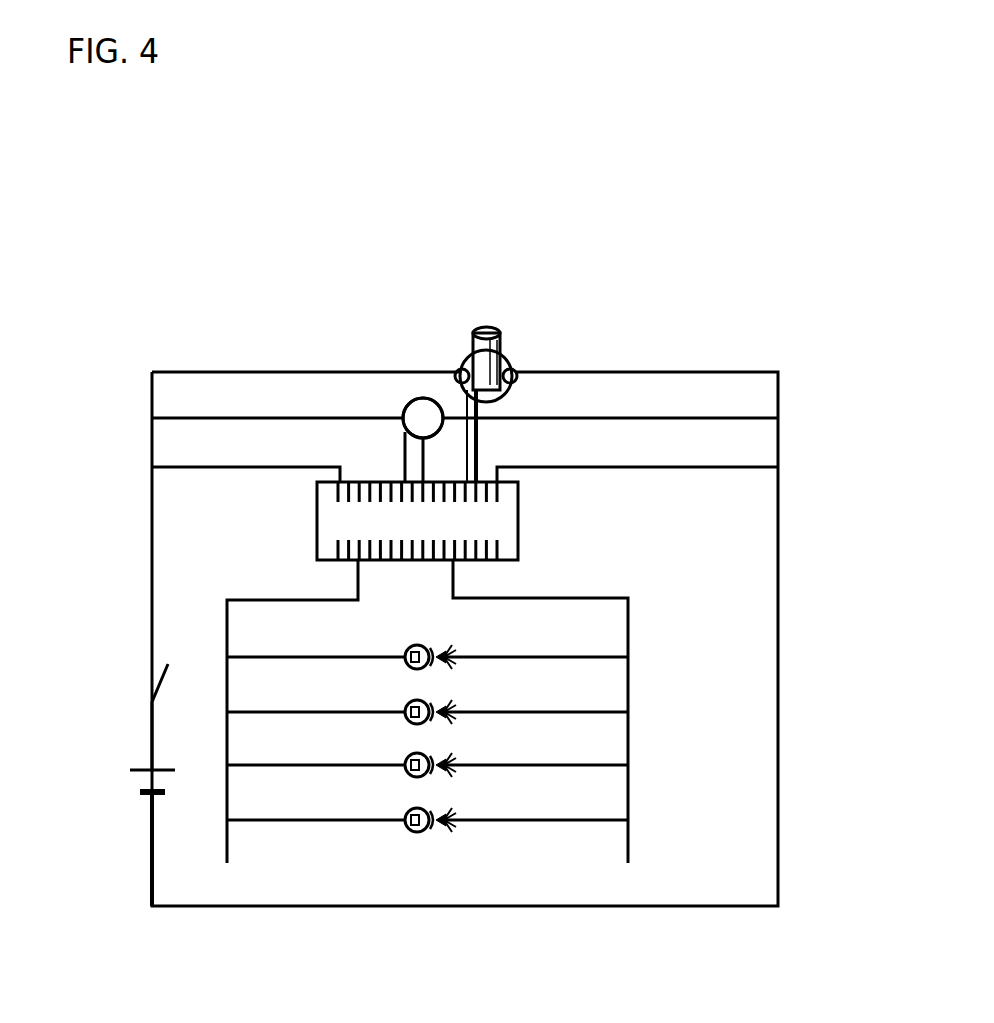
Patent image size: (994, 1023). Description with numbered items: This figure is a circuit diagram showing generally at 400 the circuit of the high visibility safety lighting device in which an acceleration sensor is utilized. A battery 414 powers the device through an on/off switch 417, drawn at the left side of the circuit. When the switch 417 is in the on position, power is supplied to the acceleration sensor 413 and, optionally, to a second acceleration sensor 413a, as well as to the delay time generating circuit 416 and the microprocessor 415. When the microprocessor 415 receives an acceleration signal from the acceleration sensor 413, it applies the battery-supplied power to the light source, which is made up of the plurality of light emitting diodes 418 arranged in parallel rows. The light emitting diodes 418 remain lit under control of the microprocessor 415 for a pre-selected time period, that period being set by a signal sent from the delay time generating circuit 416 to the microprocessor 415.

The circuit of the high visibility safety lighting device 400 is at (705, 287).
The acceleration sensor 413 is at (423, 398).
The second acceleration sensor 413a is at (423, 418).
The delay time generating circuit 416 is at (488, 327).
The microprocessor 415 is at (507, 513).
The on/off switch 417 is at (132, 680).
The battery 414 is at (132, 785).
The light emitting diodes 418 is at (440, 833).